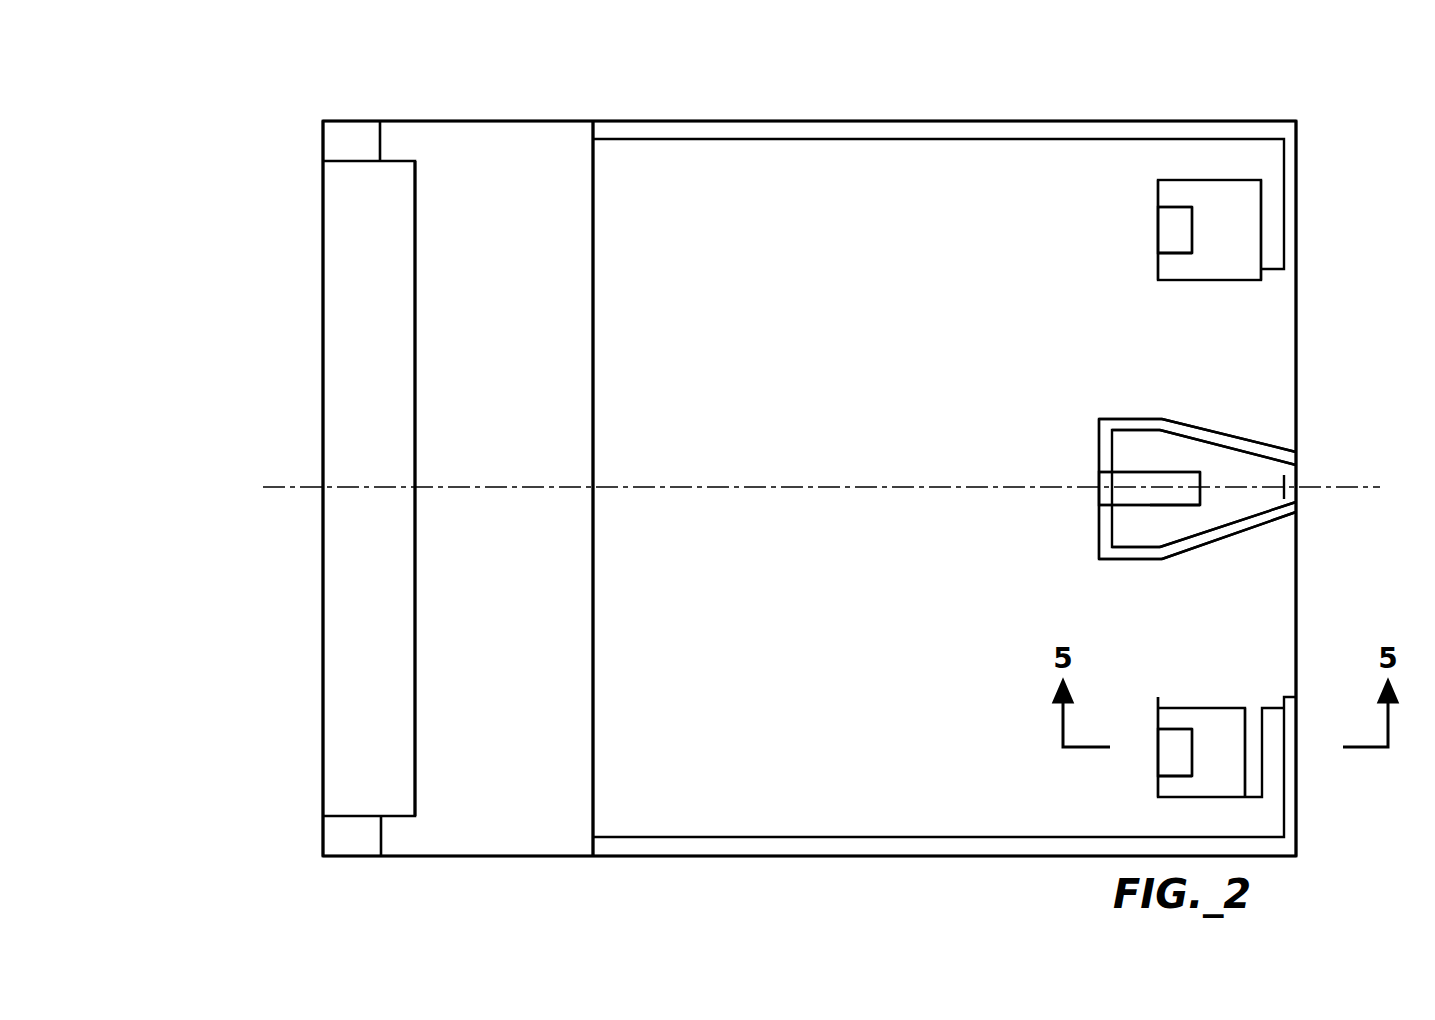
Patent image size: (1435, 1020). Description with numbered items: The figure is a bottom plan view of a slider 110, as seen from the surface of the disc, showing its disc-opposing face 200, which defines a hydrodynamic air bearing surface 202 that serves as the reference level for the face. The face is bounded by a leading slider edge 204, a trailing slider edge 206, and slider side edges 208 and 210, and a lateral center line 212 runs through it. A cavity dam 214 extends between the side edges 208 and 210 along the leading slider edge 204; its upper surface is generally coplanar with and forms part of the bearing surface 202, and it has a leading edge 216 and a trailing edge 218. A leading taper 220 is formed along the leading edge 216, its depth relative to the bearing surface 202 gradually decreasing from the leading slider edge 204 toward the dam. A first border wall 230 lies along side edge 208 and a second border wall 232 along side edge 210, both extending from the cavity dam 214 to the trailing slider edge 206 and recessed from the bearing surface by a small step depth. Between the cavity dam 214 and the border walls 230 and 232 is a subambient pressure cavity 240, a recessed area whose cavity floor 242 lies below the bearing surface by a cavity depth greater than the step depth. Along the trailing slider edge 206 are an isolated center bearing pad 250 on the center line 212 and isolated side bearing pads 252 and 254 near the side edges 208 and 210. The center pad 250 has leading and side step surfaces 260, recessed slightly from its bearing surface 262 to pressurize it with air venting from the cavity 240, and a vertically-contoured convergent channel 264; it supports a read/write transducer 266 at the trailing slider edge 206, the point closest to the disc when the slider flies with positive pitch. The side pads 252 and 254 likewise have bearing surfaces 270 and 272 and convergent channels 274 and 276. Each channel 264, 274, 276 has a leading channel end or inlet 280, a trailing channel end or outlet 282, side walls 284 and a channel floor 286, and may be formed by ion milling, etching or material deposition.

The slider 110 is at (297, 98).
The disc-opposing face 200 is at (876, 85).
The bearing surface 202 is at (507, 143).
The leading slider edge 204 is at (323, 770).
The trailing slider edge 206 is at (1297, 622).
The slider side edge 208 is at (545, 121).
The slider side edge 210 is at (530, 858).
The lateral center line 212 is at (278, 488).
The cavity dam 214 is at (516, 313).
The leading edge 216 is at (415, 320).
The trailing edge 218 is at (593, 315).
The leading taper 220 is at (333, 250).
The first border wall 230 is at (945, 128).
The second border wall 232 is at (787, 838).
The subambient pressure cavity 240 is at (782, 572).
The cavity floor 242 is at (770, 645).
The center bearing pad 250 is at (1265, 437).
The side bearing pad 252 is at (1262, 203).
The side bearing pad 254 is at (1265, 732).
The leading and side step surfaces 260 is at (1122, 424).
The bearing surface 262 is at (1208, 450).
The vertically-contoured convergent channel feature 264 is at (1097, 497).
The read/write transducer 266 is at (1290, 492).
The bearing surface 270 is at (1255, 235).
The bearing surface 272 is at (1230, 773).
The vertically-contoured convergent channel feature 274 is at (1158, 240).
The vertically-contoured convergent channel feature 276 is at (1158, 763).
The leading channel end 280 is at (1158, 222).
The trailing channel end 282 is at (1192, 220).
The side walls 284 is at (1170, 207).
The channel floor 286 is at (1183, 250).